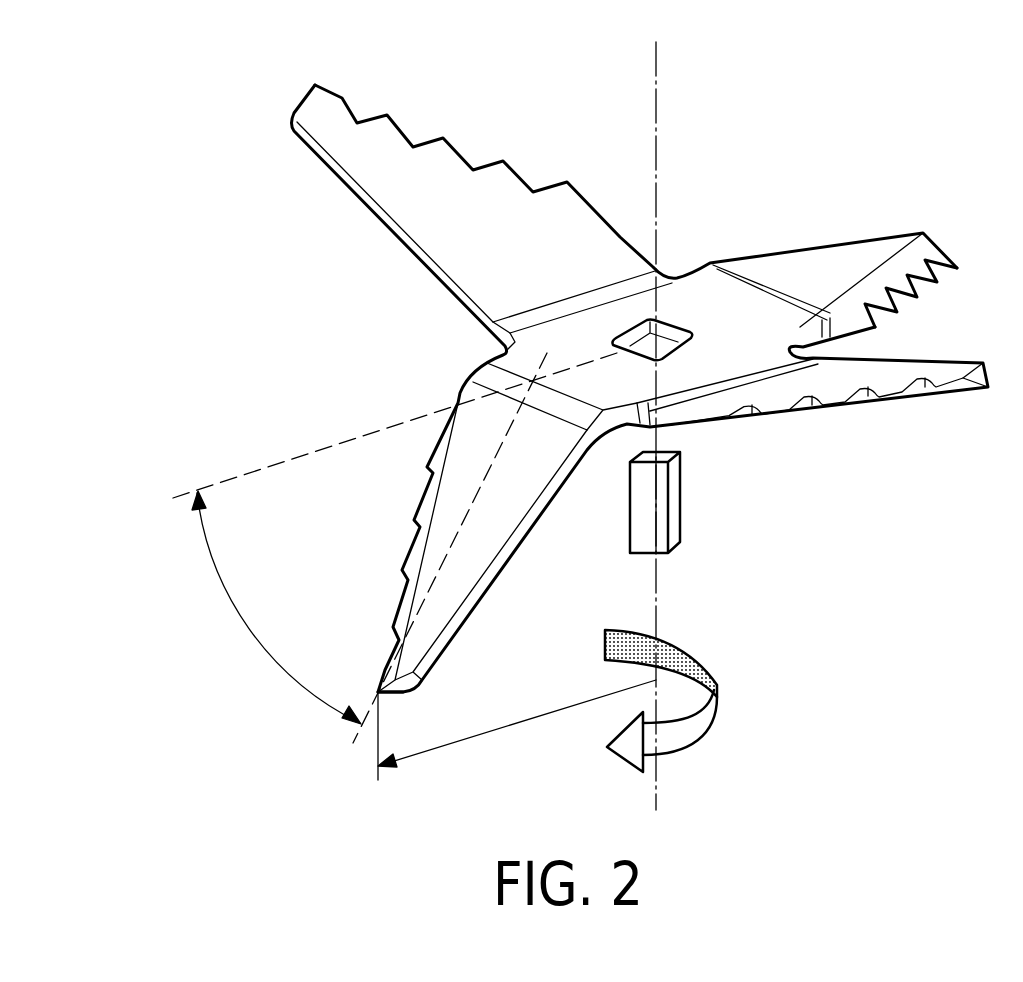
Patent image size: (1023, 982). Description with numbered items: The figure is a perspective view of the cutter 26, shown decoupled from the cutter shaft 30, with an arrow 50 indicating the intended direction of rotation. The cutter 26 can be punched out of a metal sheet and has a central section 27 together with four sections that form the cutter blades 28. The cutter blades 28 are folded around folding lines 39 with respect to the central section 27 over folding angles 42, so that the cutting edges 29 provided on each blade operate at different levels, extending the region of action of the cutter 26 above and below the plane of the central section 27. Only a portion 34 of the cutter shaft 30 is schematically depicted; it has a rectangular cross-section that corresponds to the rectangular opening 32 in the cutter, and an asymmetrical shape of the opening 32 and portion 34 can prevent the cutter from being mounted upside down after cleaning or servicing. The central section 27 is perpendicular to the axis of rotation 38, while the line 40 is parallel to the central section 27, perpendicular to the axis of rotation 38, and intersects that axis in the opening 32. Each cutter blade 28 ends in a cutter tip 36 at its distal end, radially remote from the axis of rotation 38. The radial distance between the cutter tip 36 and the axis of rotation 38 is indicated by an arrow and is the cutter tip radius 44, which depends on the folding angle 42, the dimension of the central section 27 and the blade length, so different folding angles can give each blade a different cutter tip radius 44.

The cutter 26 is at (932, 122).
The central section 27 is at (730, 313).
The cutter blades 28 is at (453, 158).
The cutting edges 29 is at (923, 278).
The cutter shaft 30 is at (708, 502).
The opening 32 is at (677, 335).
The portion of the cutter shaft 34 is at (680, 495).
The cutter tip 36 is at (378, 692).
The axis of rotation 38 is at (658, 103).
The folding lines 39 is at (487, 372).
The line 40 is at (273, 462).
The folding angle 42 is at (250, 627).
The cutter tip radius 44 is at (530, 720).
The arrow 50 is at (719, 705).